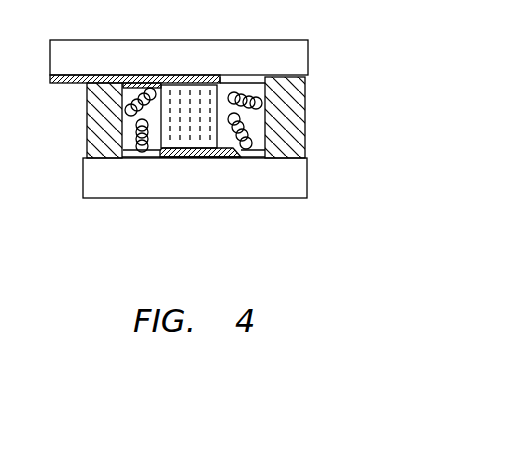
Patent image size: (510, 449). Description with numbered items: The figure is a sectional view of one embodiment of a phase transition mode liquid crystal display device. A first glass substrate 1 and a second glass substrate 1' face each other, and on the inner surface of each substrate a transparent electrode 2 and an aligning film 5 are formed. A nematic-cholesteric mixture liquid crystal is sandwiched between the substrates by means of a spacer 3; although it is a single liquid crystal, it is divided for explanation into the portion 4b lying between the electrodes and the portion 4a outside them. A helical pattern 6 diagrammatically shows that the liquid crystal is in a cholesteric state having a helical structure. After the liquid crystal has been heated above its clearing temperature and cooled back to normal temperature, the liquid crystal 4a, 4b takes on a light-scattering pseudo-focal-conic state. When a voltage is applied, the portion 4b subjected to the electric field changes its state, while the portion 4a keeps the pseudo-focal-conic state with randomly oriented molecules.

The first glass substrate 1 is at (179, 38).
The second glass substrate 1' is at (195, 197).
The transparent electrode 2 is at (98, 77).
The spacer 3 is at (100, 143).
The nematic-cholesteric mixture liquid crystal portion outside the electrodes 4a is at (141, 86).
The nematic-cholesteric mixture liquid crystal portion between the electrodes 4b is at (196, 87).
The aligning film 5 is at (283, 76).
The helical pattern 6 is at (258, 110).